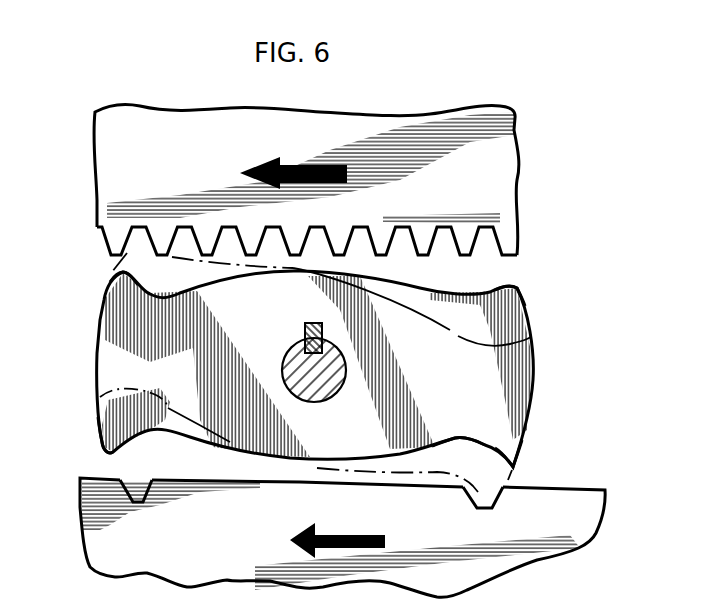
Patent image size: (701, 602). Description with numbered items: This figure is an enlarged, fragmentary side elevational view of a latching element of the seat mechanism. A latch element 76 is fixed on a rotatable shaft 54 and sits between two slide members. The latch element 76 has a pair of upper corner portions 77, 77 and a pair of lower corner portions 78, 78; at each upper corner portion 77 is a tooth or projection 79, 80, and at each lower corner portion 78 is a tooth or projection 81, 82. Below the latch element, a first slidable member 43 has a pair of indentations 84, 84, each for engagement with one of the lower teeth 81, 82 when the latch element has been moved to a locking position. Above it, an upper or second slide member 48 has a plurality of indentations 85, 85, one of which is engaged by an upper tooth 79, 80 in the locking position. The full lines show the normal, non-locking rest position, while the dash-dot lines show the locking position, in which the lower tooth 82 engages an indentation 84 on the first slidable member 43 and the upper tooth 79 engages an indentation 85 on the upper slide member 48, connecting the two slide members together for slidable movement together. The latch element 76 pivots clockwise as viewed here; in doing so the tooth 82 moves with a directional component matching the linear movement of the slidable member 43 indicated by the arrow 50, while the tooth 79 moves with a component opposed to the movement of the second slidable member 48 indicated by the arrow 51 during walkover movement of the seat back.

The first slidable member 43 is at (243, 523).
The second slide member 48 is at (460, 175).
The arrow 50 is at (343, 528).
The arrow 51 is at (265, 162).
The rotatable shaft 54 is at (322, 389).
The latch element 76 is at (457, 387).
The upper corner portion 77 is at (118, 290).
The lower corner portion 78 is at (115, 427).
The upper tooth 79 is at (135, 274).
The upper tooth 80 is at (520, 286).
The lower tooth 81 is at (117, 452).
The lower tooth 82 is at (513, 466).
The indentation 84 is at (80, 497).
The indentation 85 is at (145, 236).